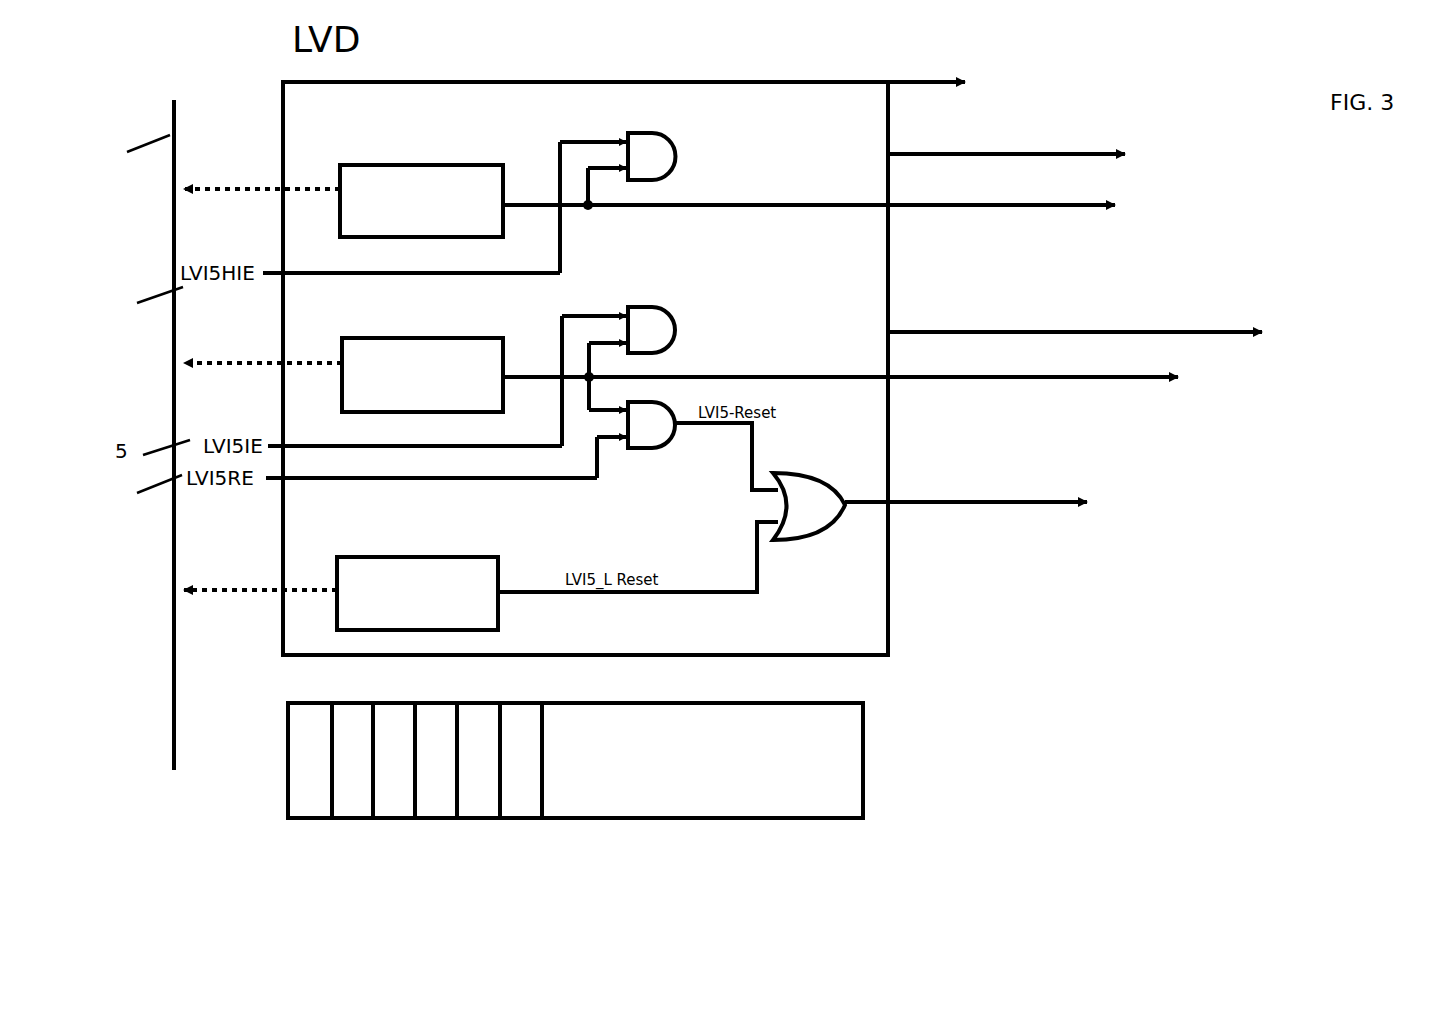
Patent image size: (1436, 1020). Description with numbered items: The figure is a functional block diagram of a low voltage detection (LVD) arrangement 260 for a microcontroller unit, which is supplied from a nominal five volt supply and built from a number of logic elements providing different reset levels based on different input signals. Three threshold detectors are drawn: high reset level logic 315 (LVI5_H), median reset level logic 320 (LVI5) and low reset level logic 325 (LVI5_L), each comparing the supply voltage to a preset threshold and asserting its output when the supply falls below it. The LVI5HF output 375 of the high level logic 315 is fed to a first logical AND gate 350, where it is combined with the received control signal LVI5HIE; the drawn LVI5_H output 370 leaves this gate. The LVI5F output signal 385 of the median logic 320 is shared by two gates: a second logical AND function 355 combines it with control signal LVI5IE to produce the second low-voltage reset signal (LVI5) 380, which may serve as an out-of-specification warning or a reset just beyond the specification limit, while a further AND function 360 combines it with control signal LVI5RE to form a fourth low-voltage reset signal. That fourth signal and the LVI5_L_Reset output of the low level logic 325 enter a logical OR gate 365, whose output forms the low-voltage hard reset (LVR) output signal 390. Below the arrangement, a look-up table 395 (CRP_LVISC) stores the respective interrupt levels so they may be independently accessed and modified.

The low voltage detection (LVD) arrangement 260 is at (635, 63).
The high reset level logic 315 is at (405, 158).
The median reset level logic 320 is at (400, 323).
The low reset level logic 325 is at (405, 548).
The first logical AND gate 350 is at (672, 134).
The second logical AND function 355 is at (670, 307).
The logical AND function 360 is at (655, 455).
The logical OR gate 365 is at (790, 470).
The LVI5_H output signal 370 is at (1055, 151).
The LVI5HF output 375 is at (1106, 198).
The second low-voltage reset signal (LVI5) 380 is at (1158, 327).
The output signal (LVI5F) 385 is at (1142, 383).
The low-voltage hard reset (LVR) output signal 390 is at (1037, 500).
The look-up table 395 is at (867, 735).